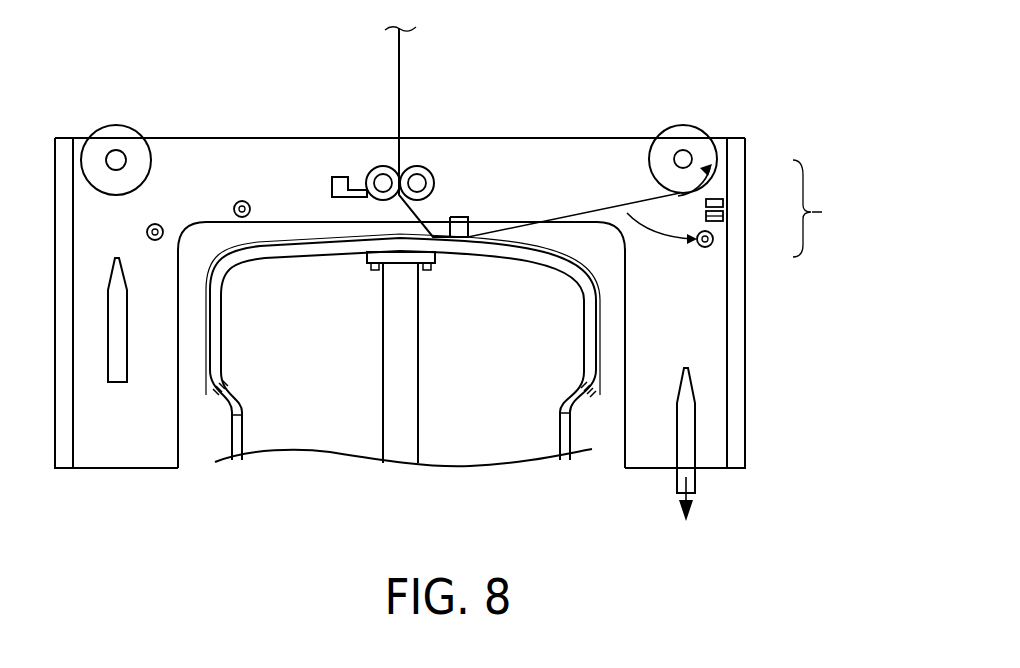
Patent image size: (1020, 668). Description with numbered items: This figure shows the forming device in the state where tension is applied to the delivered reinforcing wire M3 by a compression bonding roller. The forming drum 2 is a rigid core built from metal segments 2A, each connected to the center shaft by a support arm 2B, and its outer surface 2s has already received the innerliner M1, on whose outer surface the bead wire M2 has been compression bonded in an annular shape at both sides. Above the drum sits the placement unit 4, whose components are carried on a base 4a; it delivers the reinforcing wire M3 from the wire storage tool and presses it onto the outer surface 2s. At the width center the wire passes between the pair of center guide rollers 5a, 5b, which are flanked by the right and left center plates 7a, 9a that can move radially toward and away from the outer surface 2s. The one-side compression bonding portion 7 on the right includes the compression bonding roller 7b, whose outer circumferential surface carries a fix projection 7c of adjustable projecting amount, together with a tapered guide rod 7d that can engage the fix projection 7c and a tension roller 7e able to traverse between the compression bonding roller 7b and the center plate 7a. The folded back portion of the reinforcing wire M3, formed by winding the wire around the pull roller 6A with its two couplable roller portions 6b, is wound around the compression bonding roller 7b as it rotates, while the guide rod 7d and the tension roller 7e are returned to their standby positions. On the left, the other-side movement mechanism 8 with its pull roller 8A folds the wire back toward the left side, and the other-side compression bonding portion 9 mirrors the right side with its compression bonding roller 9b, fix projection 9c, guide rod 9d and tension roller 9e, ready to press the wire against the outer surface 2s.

The forming drum 2 is at (247, 437).
The segments 2A is at (320, 252).
The support arm 2B is at (390, 325).
The outer surface 2s is at (311, 236).
The placement unit 4 is at (500, 118).
The base 4a is at (556, 150).
The center guide roller 5a is at (421, 165).
The center guide roller 5b is at (380, 165).
The pull roller 6A is at (824, 208).
The roller portions 6b is at (724, 203).
The one-side compression bonding portion 7 is at (712, 128).
The center plate 7a is at (460, 216).
The compression bonding roller 7b is at (677, 138).
The fix projection 7c is at (720, 162).
The guide rod 7d is at (680, 433).
The tension roller 7e is at (705, 249).
The other-side movement mechanism 8 is at (232, 167).
The pull roller 8A is at (244, 203).
The other-side compression bonding portion 9 is at (86, 130).
The center plate 9a is at (337, 176).
The compression bonding roller 9b is at (122, 152).
The fix projection 9c is at (117, 196).
The guide rod 9d is at (117, 384).
The tension roller 9e is at (157, 224).
The innerliner M1 is at (224, 257).
The bead wire M2 is at (216, 400).
The reinforcing wire M3 is at (398, 85).